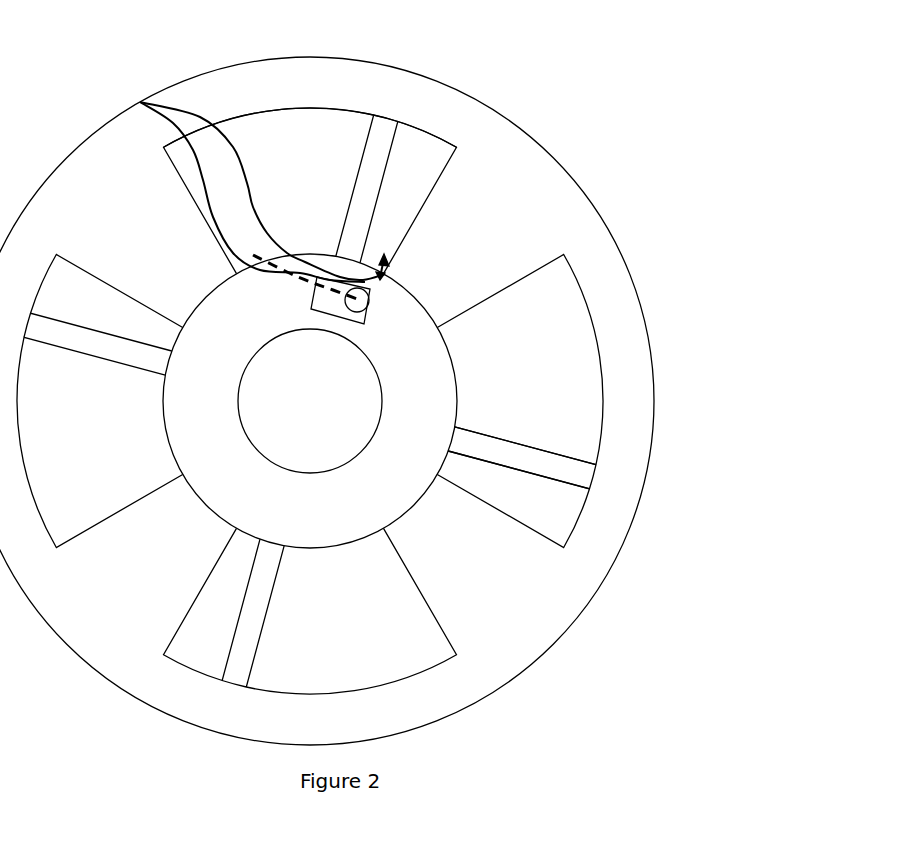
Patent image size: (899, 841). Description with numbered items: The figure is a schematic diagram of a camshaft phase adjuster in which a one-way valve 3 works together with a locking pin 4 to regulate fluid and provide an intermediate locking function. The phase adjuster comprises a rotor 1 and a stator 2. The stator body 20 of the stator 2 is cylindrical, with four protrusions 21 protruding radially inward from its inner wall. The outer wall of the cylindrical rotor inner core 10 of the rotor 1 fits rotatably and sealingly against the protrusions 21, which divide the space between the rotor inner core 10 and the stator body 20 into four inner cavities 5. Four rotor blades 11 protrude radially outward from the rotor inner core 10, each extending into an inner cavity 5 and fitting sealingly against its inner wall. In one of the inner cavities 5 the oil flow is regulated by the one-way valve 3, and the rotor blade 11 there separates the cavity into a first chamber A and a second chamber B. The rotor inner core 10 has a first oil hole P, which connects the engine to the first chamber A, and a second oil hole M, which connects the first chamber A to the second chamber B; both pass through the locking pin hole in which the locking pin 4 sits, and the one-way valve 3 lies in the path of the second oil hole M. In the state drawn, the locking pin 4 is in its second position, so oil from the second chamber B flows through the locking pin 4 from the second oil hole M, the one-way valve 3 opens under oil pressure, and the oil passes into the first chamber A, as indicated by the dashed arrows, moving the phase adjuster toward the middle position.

The rotor 1 is at (478, 401).
The rotor inner core 10 is at (430, 378).
The rotor blade 11 is at (577, 470).
The stator 2 is at (384, 401).
The stator body 20 is at (606, 523).
The protrusion 21 is at (543, 584).
The one-way valve 3 is at (385, 272).
The locking pin 4 is at (370, 304).
The inner cavity 5 is at (338, 106).
The second oil hole M is at (142, 102).
The second chamber B is at (318, 173).
The first chamber A is at (411, 173).
The first oil hole P is at (347, 322).